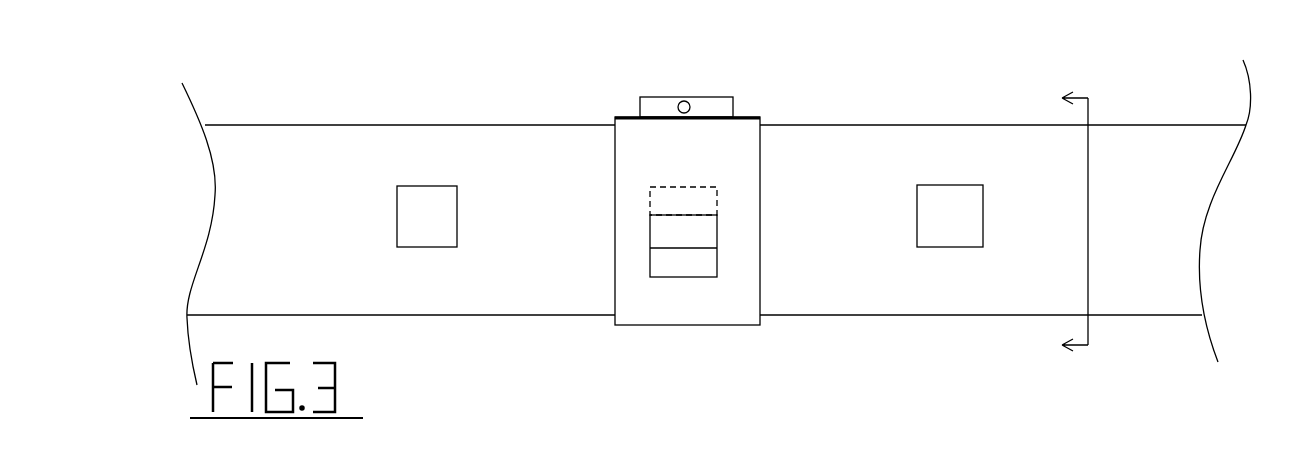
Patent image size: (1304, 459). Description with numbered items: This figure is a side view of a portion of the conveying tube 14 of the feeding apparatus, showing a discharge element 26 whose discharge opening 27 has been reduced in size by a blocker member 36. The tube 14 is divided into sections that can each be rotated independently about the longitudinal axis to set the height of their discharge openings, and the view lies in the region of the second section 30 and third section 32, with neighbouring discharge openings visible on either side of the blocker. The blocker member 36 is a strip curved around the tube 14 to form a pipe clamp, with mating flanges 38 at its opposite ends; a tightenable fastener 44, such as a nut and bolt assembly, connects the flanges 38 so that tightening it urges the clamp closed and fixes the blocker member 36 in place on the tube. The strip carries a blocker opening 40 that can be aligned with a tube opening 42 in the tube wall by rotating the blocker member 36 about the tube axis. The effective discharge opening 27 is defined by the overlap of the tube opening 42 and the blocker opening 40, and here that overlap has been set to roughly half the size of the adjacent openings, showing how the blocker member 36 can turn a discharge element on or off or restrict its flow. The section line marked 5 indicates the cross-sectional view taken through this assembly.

The conveying tube 14 is at (876, 124).
The second section 30 is at (470, 273).
The third section 32 is at (895, 278).
The blocker member 36 is at (743, 283).
The discharge element 26 is at (611, 268).
The mating flanges 38 is at (715, 105).
The tightenable fastener 44 is at (676, 104).
The tube opening 42 is at (690, 198).
The discharge opening 27 is at (683, 231).
The blocker opening 40 is at (693, 263).
The section line 5- 5 is at (1086, 221).